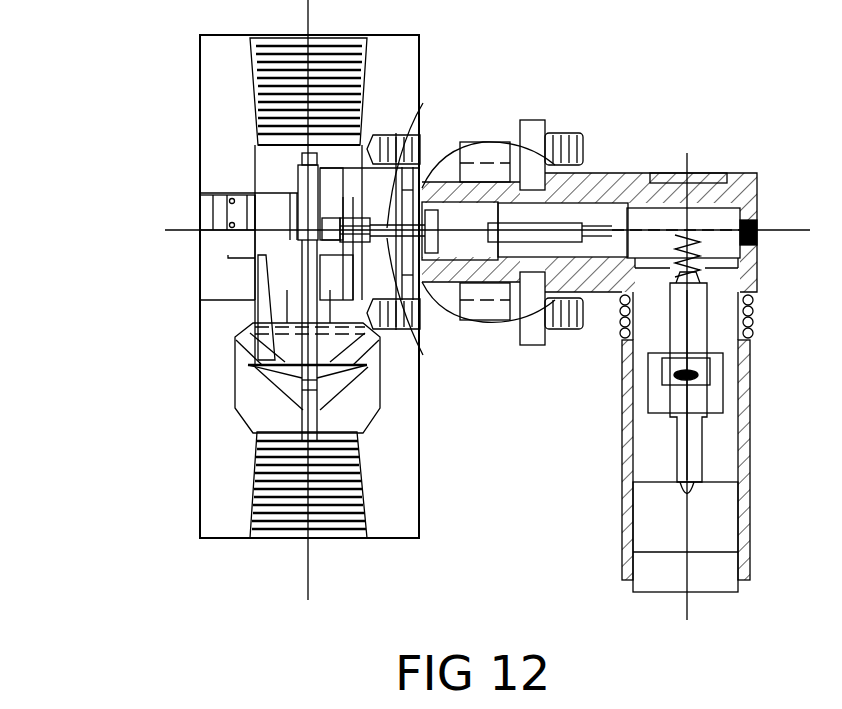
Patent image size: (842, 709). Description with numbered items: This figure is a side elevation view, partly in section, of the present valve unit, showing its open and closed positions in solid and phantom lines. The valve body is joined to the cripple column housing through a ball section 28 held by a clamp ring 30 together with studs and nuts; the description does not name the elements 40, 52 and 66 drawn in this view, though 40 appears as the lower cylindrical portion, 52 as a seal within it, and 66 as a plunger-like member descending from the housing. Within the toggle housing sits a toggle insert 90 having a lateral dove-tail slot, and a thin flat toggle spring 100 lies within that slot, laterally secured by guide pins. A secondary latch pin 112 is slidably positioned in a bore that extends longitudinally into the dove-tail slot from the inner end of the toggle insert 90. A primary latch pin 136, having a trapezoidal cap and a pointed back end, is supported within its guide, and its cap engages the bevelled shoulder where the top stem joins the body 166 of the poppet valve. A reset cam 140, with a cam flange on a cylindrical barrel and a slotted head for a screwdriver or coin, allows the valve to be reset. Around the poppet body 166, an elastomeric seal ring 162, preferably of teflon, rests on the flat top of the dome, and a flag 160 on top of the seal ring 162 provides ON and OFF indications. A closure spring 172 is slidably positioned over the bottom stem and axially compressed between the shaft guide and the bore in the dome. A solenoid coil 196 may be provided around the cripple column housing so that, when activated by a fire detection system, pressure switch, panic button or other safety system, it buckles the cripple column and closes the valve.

The ball section 28 is at (482, 150).
The clamp ring 30 is at (543, 118).
The cylinder 40 is at (728, 520).
The seal 52 is at (720, 380).
The plunger 66 is at (712, 305).
The toggle insert 90 is at (615, 195).
The toggle spring 100 is at (706, 218).
The secondary latch pin 112 is at (568, 212).
The primary latch pin 136 is at (422, 105).
The reset cam 140 is at (267, 202).
The flag 160 is at (255, 285).
The elastomeric seal ring 162 is at (257, 360).
The body 166 is at (342, 387).
The closure spring 172 is at (317, 422).
The solenoid coil 196 is at (622, 327).